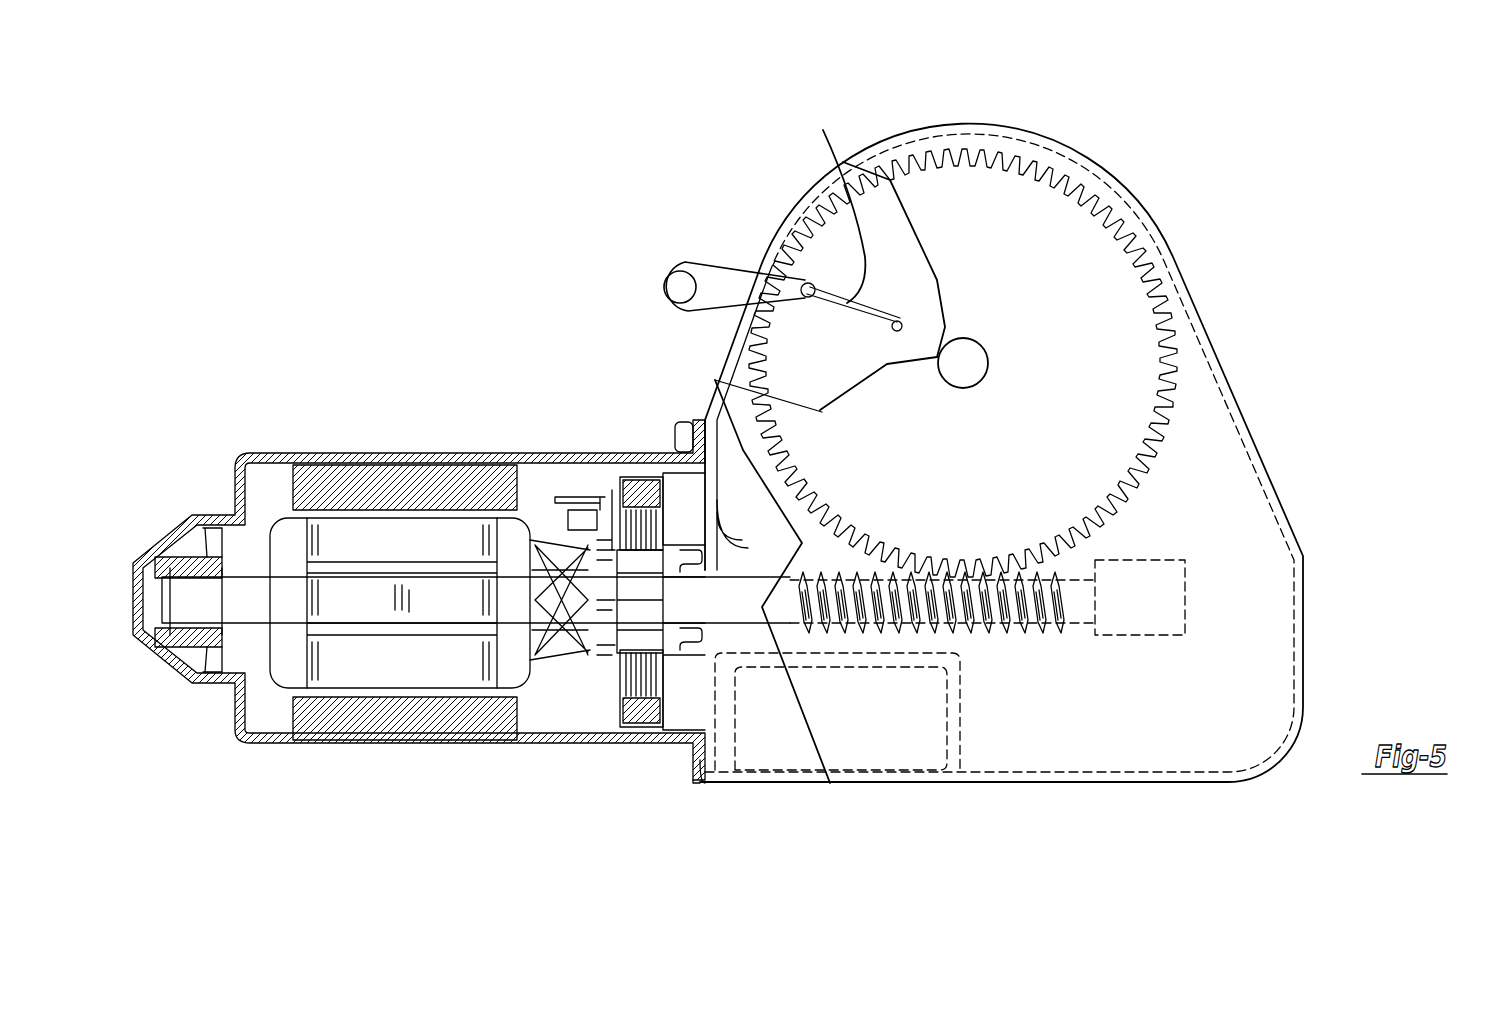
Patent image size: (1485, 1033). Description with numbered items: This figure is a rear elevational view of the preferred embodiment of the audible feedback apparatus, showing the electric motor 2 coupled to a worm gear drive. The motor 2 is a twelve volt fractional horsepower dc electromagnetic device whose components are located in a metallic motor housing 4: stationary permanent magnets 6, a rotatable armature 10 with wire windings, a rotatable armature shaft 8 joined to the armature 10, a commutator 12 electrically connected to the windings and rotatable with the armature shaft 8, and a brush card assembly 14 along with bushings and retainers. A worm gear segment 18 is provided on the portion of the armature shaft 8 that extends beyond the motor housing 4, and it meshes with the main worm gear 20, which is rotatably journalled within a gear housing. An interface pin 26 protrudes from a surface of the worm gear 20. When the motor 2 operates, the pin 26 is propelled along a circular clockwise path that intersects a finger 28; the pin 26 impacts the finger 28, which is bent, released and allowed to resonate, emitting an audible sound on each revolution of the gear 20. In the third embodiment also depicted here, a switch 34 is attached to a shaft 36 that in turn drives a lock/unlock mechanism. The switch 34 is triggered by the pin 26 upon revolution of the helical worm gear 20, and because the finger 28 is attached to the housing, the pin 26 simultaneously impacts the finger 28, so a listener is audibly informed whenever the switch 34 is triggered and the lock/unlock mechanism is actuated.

The electric motor 2 is at (258, 412).
The motor housing 4 is at (370, 453).
The permanent magnets 6 is at (373, 727).
The armature shaft 8 is at (727, 607).
The armature 10 is at (335, 657).
The commutator 12 is at (630, 618).
The brush card assembly 14 is at (630, 678).
The worm gear segment 18 is at (1003, 575).
The worm gear 20 is at (1030, 257).
The interface pin 26 is at (809, 283).
The finger 28 is at (823, 130).
The switch 34 is at (716, 275).
The shaft 36 is at (678, 288).